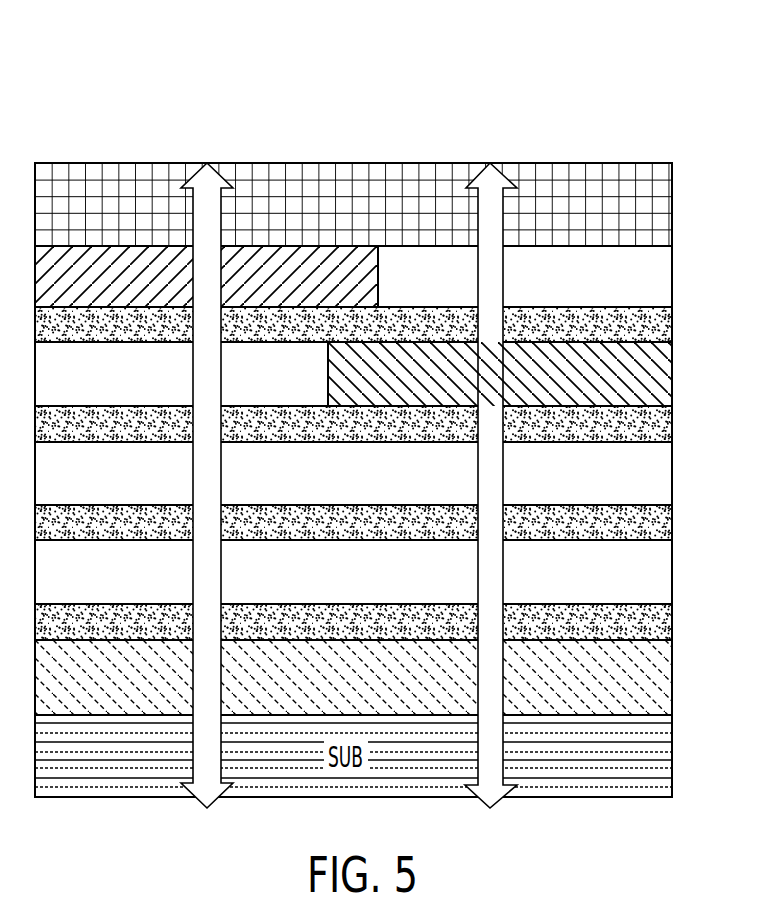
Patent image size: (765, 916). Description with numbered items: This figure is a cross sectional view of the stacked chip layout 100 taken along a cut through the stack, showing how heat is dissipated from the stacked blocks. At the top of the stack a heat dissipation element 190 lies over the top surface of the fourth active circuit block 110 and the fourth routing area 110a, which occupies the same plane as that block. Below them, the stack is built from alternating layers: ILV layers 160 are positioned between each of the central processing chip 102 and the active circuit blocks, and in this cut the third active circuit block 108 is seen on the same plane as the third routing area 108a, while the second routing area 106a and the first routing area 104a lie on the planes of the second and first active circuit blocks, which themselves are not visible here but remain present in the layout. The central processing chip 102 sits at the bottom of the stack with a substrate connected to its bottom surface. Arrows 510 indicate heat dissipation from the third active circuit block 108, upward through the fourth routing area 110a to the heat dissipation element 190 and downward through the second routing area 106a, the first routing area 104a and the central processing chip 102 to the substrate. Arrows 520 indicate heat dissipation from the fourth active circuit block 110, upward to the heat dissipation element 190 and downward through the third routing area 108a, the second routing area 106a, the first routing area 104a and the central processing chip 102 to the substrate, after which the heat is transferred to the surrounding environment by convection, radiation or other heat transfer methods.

The stacked chip layout 100 is at (69, 78).
The heat dissipation element 190 is at (367, 215).
The fourth active circuit block 110 is at (223, 287).
The fourth routing area 110a is at (553, 292).
The ILV layers 160 is at (360, 334).
The third routing area 108a is at (188, 387).
The third active circuit block 108 is at (518, 387).
The second routing area 106a is at (365, 485).
The first routing area 104a is at (365, 588).
The central processing chip 102 is at (358, 688).
The arrows 520 is at (204, 185).
The arrows 510 is at (488, 185).